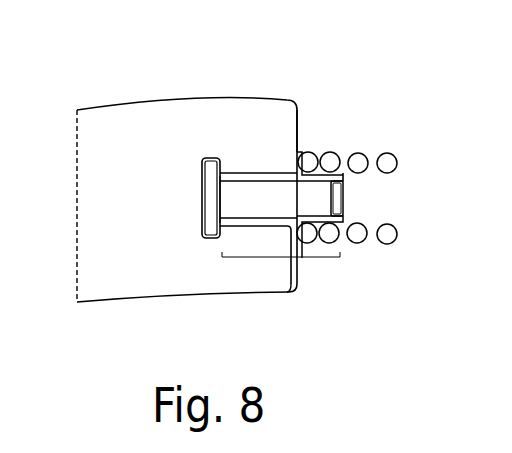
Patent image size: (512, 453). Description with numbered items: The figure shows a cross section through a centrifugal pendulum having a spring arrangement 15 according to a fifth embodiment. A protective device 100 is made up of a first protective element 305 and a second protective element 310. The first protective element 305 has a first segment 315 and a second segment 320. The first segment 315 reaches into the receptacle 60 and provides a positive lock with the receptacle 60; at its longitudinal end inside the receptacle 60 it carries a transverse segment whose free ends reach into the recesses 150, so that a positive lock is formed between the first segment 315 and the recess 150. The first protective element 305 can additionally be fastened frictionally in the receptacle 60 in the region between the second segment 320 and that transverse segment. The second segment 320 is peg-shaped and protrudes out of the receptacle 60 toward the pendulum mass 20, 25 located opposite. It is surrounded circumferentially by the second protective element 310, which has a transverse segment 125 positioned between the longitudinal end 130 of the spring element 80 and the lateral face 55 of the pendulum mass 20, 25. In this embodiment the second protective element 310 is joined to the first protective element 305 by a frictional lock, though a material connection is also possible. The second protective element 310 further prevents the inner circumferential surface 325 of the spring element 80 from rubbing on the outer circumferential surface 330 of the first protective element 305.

The spring arrangement 15 is at (254, 70).
The pendulum mass 20 is at (172, 169).
The pendulum mass 25 is at (103, 122).
The lateral face 55 is at (297, 124).
The receptacle 60 is at (268, 173).
The spring element 80 is at (388, 238).
The protective device 100 is at (314, 130).
The transverse segment 125 is at (298, 172).
The longitudinal end 130 is at (296, 163).
The recess 150 is at (208, 160).
The first protective element 305 is at (235, 190).
The second protective element 310 is at (336, 222).
The first segment 315 is at (257, 257).
The second segment 320 is at (315, 258).
The inner circumferential surface 325 is at (318, 222).
The outer circumferential surface 330 is at (328, 223).